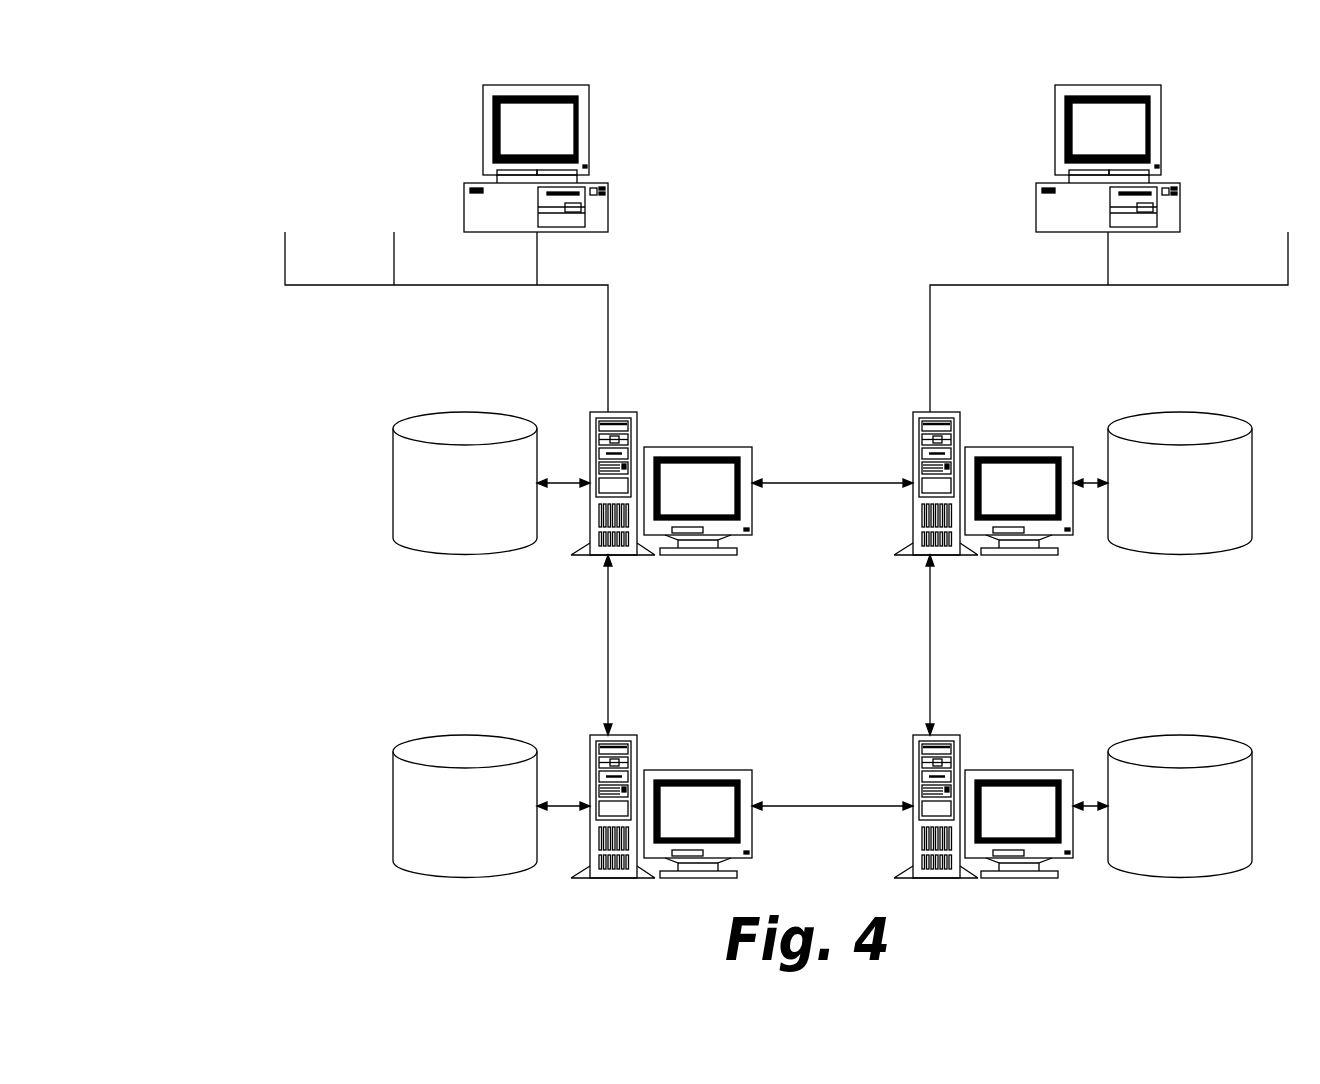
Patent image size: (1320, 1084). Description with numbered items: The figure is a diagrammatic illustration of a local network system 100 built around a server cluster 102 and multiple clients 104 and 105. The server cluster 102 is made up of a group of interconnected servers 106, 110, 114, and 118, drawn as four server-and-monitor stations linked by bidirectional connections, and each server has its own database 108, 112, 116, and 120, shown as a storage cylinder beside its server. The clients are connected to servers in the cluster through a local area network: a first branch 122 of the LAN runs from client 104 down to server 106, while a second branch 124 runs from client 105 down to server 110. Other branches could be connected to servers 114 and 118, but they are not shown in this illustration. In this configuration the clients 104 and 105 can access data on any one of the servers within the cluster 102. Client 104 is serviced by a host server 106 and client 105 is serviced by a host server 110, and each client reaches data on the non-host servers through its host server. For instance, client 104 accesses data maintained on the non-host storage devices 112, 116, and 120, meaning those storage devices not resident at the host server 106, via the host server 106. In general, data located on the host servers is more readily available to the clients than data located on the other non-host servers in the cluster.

The local network system 100 is at (258, 502).
The server cluster 102 is at (807, 366).
The client 104 is at (608, 195).
The client 105 is at (1182, 195).
The server 106 is at (697, 447).
The database 108 is at (465, 428).
The server 110 is at (1020, 447).
The database 112 is at (1182, 428).
The server 114 is at (697, 770).
The database 116 is at (465, 751).
The server 118 is at (1020, 770).
The database 120 is at (1182, 751).
The first branch 122 is at (608, 320).
The second branch 124 is at (930, 340).